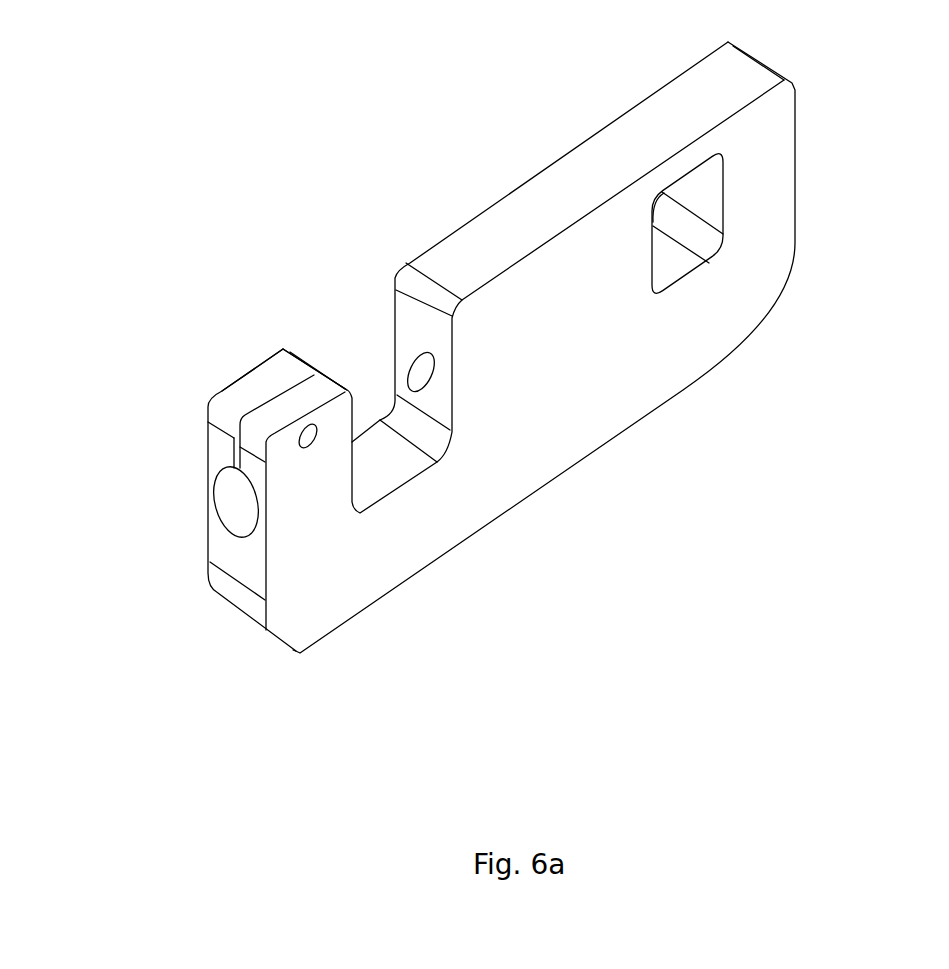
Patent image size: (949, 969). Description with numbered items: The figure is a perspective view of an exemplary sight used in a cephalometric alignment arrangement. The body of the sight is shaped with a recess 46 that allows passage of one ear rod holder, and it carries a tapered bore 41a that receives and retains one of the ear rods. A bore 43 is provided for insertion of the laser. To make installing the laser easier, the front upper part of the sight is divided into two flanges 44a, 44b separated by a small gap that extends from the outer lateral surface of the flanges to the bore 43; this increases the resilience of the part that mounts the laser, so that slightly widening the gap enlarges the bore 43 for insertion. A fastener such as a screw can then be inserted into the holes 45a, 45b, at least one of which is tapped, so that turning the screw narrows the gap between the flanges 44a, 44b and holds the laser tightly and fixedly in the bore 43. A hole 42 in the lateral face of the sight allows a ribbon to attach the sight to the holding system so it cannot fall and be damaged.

The tapered bore 41a is at (428, 376).
The hole 42 is at (695, 205).
The bore 43 is at (235, 502).
The flange 44a is at (245, 388).
The flange 44b is at (305, 393).
The hole 45a is at (300, 447).
The hole 45b is at (265, 354).
The recess 46 is at (363, 358).